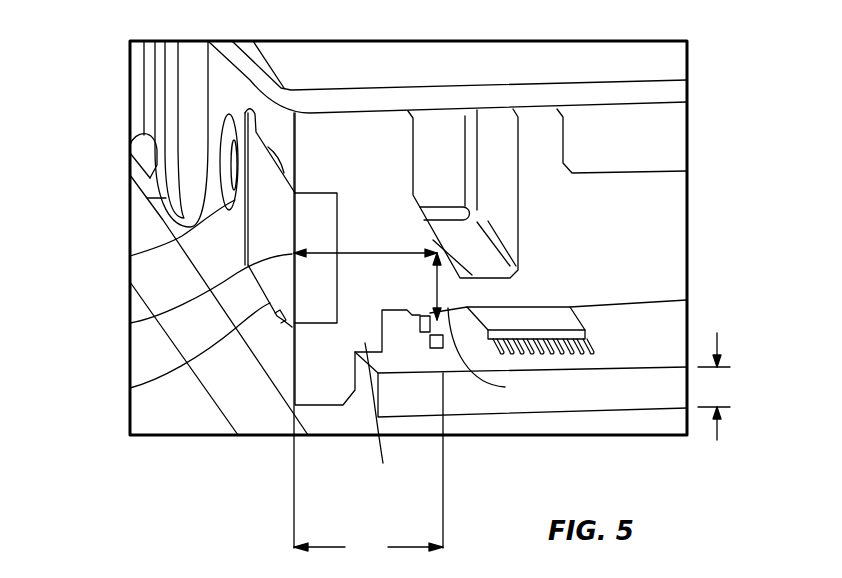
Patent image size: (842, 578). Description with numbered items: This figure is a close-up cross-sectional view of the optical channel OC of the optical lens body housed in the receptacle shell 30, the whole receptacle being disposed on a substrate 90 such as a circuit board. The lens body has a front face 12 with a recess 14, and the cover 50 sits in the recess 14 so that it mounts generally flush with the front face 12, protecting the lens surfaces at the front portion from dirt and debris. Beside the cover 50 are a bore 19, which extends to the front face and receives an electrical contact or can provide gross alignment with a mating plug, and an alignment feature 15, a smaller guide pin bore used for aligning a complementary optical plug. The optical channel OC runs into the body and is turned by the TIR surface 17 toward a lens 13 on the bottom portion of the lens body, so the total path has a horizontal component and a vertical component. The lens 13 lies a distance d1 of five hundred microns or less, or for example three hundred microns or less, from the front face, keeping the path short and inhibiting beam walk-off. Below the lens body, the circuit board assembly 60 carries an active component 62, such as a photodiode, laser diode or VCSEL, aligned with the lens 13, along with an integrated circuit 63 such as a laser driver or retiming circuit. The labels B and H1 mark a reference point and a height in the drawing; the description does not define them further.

The front face 12 is at (321, 398).
The lens 13 is at (490, 354).
The recess 14 is at (130, 388).
The alignment feature 15 is at (130, 256).
The TIR surface 17 is at (435, 236).
The bore 19 is at (195, 113).
The receptacle shell 30 is at (630, 93).
The cover 50 is at (130, 323).
The circuit board assembly 60 is at (638, 382).
The active component 62 is at (430, 348).
The integrated circuit 63 is at (549, 322).
The substrate 90 is at (260, 402).
The reference point B is at (377, 417).
The optical channel OC is at (373, 250).
The board height H1 is at (714, 386).
The distance d1 is at (368, 336).